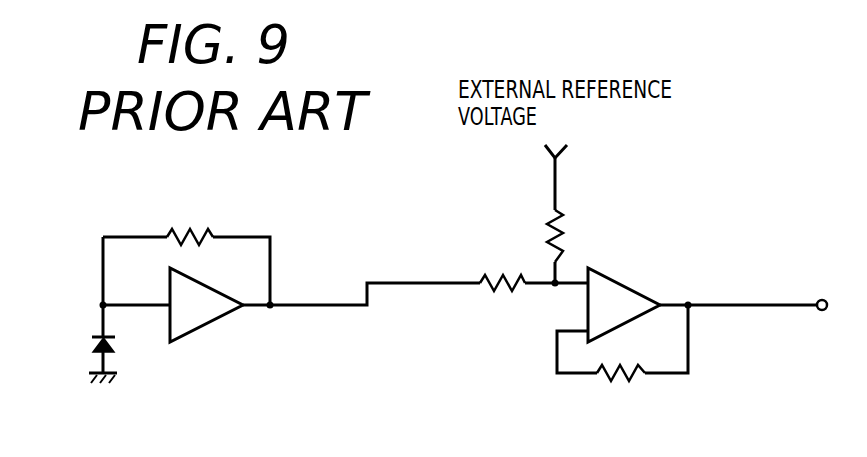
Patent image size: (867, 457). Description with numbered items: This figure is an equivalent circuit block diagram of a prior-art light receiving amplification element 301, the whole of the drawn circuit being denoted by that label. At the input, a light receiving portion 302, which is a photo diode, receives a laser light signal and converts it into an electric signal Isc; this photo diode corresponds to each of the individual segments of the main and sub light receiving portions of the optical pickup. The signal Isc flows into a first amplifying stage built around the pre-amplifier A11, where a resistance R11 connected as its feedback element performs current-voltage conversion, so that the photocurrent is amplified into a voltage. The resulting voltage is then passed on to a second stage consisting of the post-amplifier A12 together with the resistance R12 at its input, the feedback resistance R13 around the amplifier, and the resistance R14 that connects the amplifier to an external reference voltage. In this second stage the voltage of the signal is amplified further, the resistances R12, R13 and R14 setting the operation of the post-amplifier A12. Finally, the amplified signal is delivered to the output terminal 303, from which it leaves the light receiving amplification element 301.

The light receiving portion 302 is at (92, 343).
The resistance R11 is at (196, 226).
The pre-amplifier A11 is at (199, 312).
The resistance R12 is at (496, 276).
The resistance R14 is at (565, 223).
The post-amplifier A12 is at (612, 297).
The resistance R13 is at (611, 385).
The output terminal 303 is at (822, 298).
The light receiving amplification element 301 is at (648, 170).